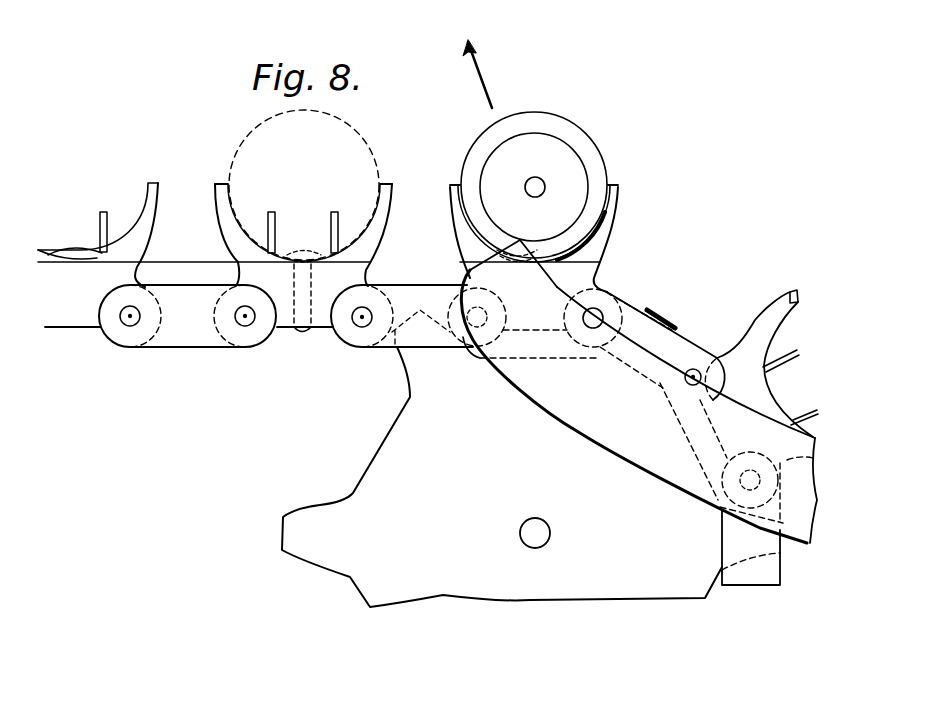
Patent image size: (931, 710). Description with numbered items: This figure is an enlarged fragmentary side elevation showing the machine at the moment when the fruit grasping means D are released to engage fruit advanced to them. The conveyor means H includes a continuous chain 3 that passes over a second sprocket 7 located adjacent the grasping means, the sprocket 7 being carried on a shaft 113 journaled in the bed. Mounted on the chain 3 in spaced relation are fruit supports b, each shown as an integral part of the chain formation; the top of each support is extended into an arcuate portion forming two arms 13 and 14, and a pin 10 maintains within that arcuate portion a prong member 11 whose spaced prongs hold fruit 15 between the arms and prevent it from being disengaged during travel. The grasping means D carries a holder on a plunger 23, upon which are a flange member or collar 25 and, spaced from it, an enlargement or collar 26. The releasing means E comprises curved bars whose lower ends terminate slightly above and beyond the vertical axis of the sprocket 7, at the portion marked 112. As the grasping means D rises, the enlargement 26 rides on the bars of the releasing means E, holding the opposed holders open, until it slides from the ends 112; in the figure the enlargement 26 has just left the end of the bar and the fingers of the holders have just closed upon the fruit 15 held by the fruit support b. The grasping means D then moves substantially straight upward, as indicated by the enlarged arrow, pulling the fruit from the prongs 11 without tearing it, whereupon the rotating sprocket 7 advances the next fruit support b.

The continuous chain 3 is at (192, 333).
The second sprocket 7 is at (502, 494).
The pin 10 is at (290, 331).
The prong member 11 is at (331, 223).
The arm 13 is at (381, 183).
The arm 14 is at (221, 183).
The fruit 15 is at (342, 147).
The plunger 23 is at (541, 192).
The flange member or collar 25 is at (596, 155).
The enlargement or collar 26 is at (579, 178).
The end of releasing member 112 is at (518, 241).
The shaft 113 is at (537, 549).
The fruit support b is at (368, 240).
The fruit grasping means D is at (571, 183).
The releasing means E is at (639, 427).
The conveyor means H is at (520, 237).